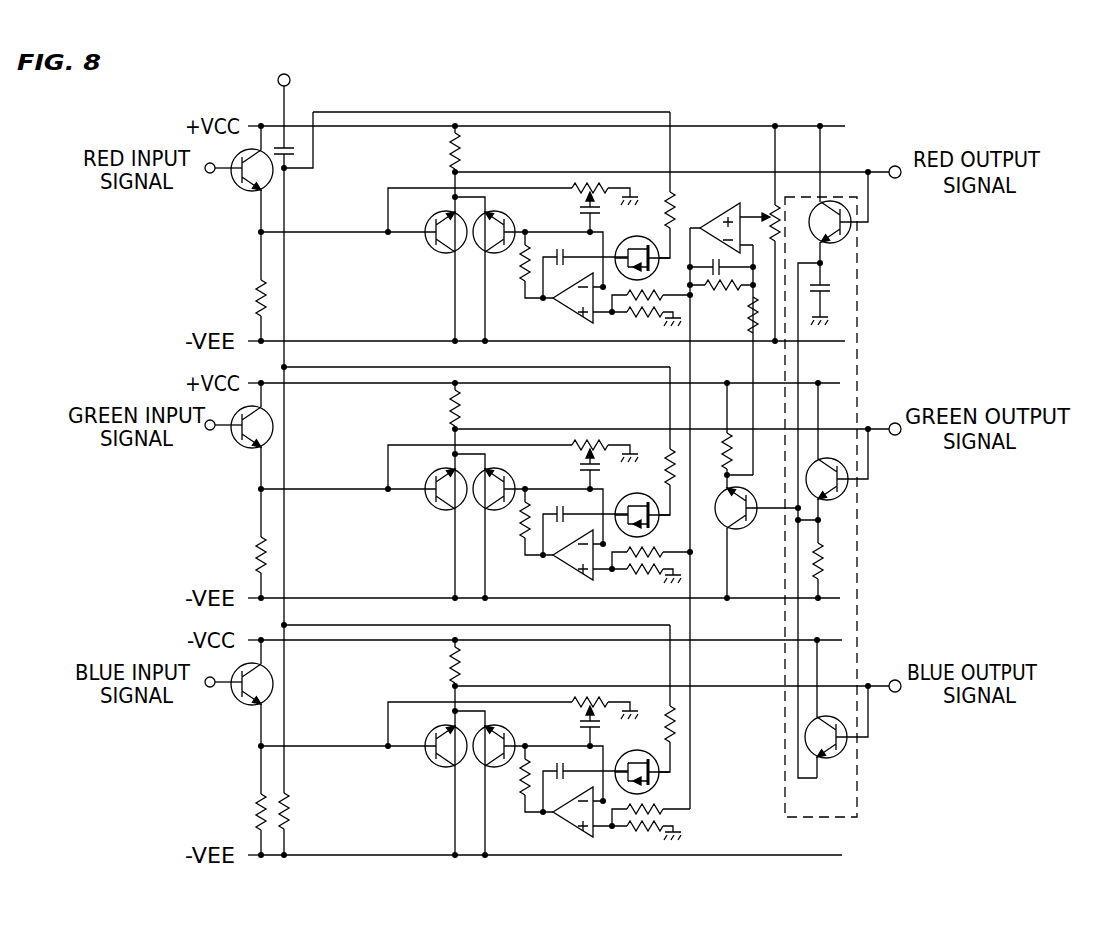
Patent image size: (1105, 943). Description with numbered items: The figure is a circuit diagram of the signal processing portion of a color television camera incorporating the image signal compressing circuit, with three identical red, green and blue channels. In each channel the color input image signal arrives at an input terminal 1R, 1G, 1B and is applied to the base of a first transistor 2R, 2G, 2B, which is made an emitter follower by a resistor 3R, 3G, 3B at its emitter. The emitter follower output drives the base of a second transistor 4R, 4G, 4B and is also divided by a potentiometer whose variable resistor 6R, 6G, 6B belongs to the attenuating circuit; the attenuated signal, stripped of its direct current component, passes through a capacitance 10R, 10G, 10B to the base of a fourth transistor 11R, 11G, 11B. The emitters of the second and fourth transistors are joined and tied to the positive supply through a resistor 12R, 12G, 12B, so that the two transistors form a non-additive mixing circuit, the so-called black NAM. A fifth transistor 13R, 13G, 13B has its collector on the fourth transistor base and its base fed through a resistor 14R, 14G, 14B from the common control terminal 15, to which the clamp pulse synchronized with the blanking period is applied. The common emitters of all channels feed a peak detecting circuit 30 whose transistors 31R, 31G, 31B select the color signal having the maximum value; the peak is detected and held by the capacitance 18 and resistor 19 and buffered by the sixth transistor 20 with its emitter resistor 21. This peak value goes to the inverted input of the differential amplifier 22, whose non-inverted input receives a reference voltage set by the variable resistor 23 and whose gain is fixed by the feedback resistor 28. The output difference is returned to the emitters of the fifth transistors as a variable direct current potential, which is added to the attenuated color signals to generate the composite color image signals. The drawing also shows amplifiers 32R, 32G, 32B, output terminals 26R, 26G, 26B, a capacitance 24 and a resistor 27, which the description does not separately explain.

The control terminal 15 is at (290, 82).
The input terminal 1R is at (207, 174).
The first transistor 2R is at (243, 188).
The resistor 3R is at (257, 300).
The second transistor 4R is at (436, 258).
The variable resistor 6R is at (597, 185).
The capacitance 10R is at (584, 210).
The fourth transistor 11R is at (498, 254).
The resistor 12R is at (446, 157).
The fifth transistor 13R is at (633, 236).
The resistor 14R is at (676, 196).
The red operational amplifier 32R is at (565, 315).
The red output signal terminal 26R is at (890, 166).
The transistor 31R is at (848, 236).
The input terminal 1G is at (207, 431).
The first transistor 2G is at (243, 445).
The resistor 3G is at (257, 557).
The second transistor 4G is at (436, 515).
The variable resistor 6G is at (597, 442).
The capacitance 10G is at (584, 467).
The fourth transistor 11G is at (498, 511).
The resistor 12G is at (446, 414).
The fifth transistor 13G is at (633, 493).
The resistor 14G is at (676, 453).
The green operational amplifier 32G is at (565, 572).
The green output signal terminal 26G is at (890, 423).
The transistor 31G is at (848, 493).
The input terminal 1B is at (207, 688).
The first transistor 2B is at (243, 702).
The resistor 3B is at (257, 814).
The second transistor 4B is at (436, 772).
The variable resistor 6B is at (597, 699).
The capacitance 10B is at (584, 724).
The fourth transistor 11B is at (498, 768).
The resistor 12B is at (446, 671).
The fifth transistor 13B is at (633, 750).
The resistor 14B is at (676, 712).
The blue operational amplifier 32B is at (565, 829).
The blue output signal terminal 26B is at (890, 680).
The transistor 31B is at (846, 750).
The capacitance 18 is at (828, 290).
The resistor 19 is at (826, 555).
The sixth transistor 20 is at (738, 530).
The resistor 21 is at (718, 452).
The differential amplifier 22 is at (719, 215).
The variable resistor 23 is at (780, 208).
The capacitor 24 is at (705, 262).
The resistor 27 is at (748, 332).
The resistor 28 is at (737, 292).
The peak detecting circuit 30 is at (860, 598).